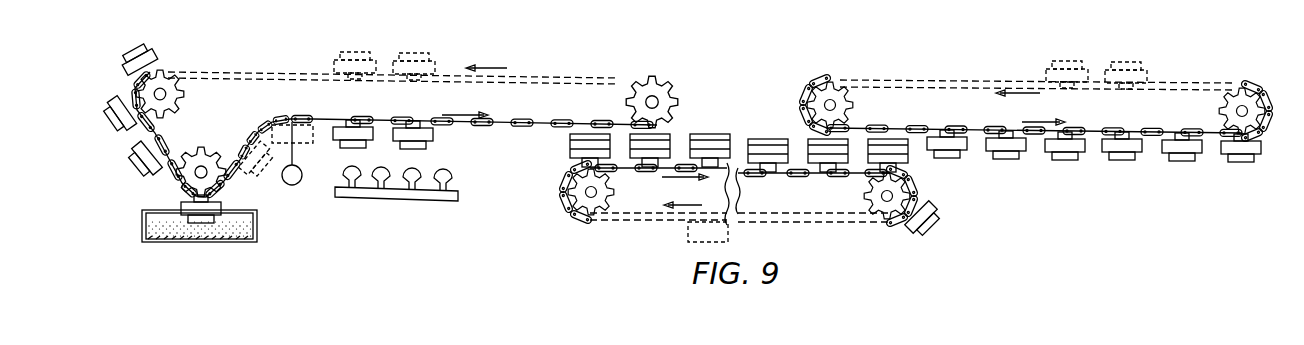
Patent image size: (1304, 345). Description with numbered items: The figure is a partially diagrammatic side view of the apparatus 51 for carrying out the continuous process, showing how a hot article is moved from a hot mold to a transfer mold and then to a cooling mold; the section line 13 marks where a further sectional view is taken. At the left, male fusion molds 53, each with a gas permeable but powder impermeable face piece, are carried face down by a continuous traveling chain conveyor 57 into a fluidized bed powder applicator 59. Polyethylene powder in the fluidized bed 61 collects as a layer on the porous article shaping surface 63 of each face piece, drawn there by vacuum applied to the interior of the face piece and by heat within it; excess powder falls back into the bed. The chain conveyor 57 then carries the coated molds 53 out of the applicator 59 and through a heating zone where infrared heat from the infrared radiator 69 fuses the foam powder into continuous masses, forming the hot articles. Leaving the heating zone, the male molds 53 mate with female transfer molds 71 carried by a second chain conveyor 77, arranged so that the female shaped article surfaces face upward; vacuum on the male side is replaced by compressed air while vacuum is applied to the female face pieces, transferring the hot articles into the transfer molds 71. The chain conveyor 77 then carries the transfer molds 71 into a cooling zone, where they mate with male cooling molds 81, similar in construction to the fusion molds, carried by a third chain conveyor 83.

The section line 13- 13 is at (618, 165).
The apparatus 51 is at (1069, 170).
The male fusion mold 53 is at (158, 176).
The chain conveyor 57 is at (519, 127).
The fluidized bed powder applicator 59 is at (215, 227).
The fluidized bed 61 is at (243, 231).
The article shaping surface 63 is at (137, 163).
The infrared radiator 69 is at (399, 199).
The female transfer mold 71 is at (770, 155).
The chain conveyor 77 is at (817, 177).
The male cooling mold 81 is at (1018, 143).
The chain conveyor 83 is at (1150, 136).